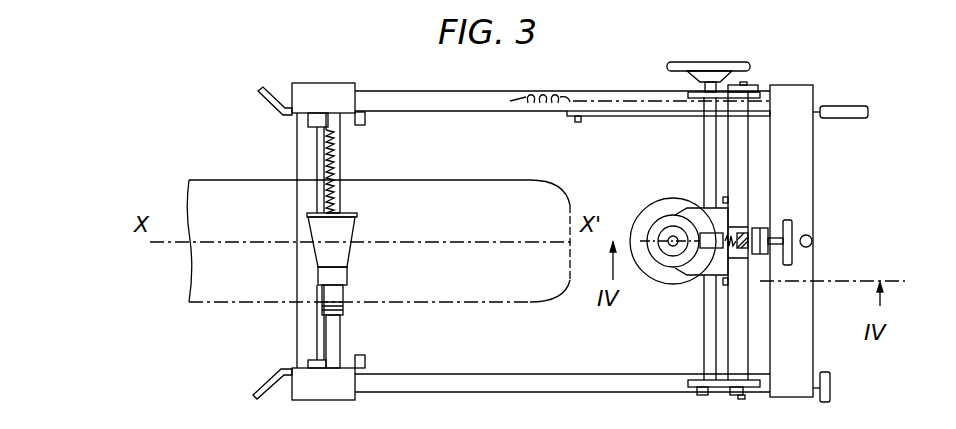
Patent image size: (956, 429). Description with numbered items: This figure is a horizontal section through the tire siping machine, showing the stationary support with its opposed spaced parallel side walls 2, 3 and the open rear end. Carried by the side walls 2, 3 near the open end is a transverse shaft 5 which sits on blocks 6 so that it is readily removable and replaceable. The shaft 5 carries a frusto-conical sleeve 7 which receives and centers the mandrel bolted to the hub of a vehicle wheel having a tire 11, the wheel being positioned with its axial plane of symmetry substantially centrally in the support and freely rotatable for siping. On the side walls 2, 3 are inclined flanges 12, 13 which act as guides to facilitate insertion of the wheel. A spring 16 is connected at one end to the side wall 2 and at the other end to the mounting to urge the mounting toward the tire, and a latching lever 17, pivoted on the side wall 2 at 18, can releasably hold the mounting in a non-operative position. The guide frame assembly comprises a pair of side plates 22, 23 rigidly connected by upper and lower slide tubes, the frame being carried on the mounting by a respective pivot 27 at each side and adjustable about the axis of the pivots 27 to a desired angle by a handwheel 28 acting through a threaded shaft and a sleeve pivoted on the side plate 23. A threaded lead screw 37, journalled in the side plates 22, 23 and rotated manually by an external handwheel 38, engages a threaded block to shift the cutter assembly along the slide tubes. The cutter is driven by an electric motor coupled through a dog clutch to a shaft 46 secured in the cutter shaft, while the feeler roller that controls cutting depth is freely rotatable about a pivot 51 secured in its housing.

The side wall 2 is at (422, 98).
The side wall 3 is at (466, 386).
The transverse shaft 5 is at (343, 155).
The block 6 is at (363, 118).
The frusto-conical sleeve 7 is at (342, 226).
The tire 11 is at (533, 303).
The flange 12 is at (267, 106).
The flange 13 is at (277, 377).
The spring 16 is at (545, 91).
The latching lever 17 is at (770, 111).
The pivot 18 is at (578, 123).
The side plate 22 is at (755, 91).
The side plate 23 is at (737, 381).
The pivot 27 is at (744, 83).
The handwheel 28 is at (831, 389).
The threaded lead screw 37 is at (704, 147).
The external handwheel 38 is at (694, 61).
The shaft 46 is at (752, 227).
The pivot 51 is at (793, 219).